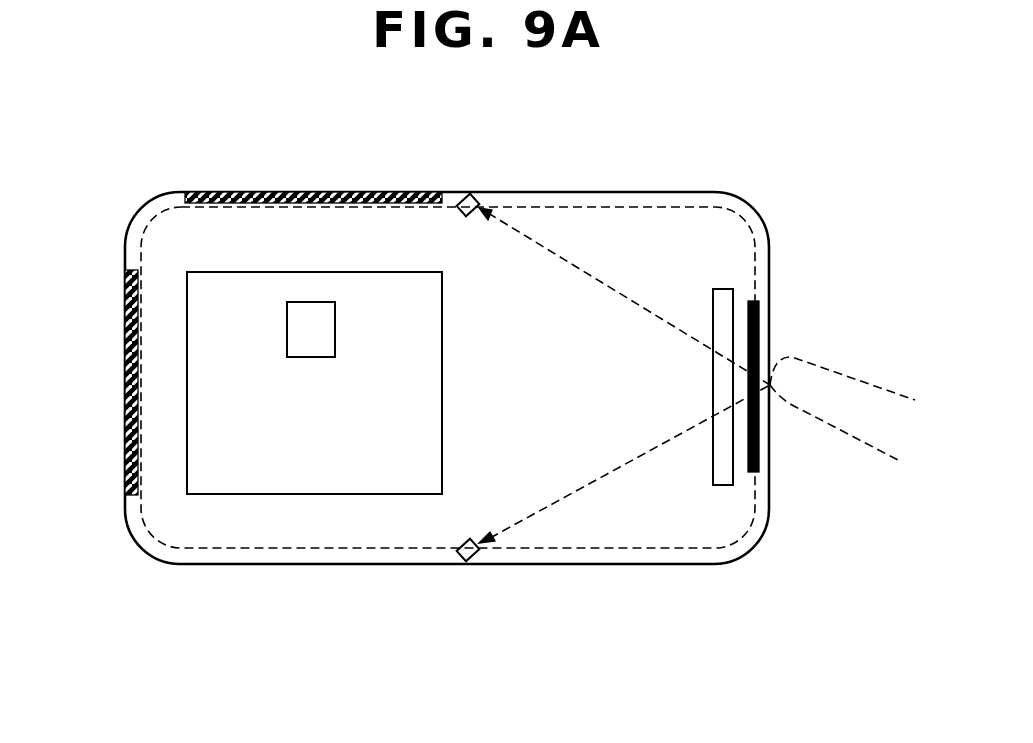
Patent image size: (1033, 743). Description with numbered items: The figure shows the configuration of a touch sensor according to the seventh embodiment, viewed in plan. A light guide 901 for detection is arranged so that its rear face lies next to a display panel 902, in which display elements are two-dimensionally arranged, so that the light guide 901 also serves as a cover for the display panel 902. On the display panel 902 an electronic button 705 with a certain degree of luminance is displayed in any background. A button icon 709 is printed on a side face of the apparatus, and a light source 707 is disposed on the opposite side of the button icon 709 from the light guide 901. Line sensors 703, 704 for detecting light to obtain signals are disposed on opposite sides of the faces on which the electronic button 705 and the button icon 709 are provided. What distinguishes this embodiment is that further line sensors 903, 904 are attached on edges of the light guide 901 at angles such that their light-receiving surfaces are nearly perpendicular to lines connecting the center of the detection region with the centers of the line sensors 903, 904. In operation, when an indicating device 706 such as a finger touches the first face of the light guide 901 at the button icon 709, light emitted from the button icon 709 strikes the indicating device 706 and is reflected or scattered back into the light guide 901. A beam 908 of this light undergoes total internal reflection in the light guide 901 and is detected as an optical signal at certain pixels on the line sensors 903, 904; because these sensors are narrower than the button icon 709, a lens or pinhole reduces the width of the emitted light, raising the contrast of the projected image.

The light guide 901 is at (155, 393).
The line sensor 703 is at (125, 301).
The line sensor 704 is at (330, 192).
The display panel 902 is at (241, 283).
The electronic button 705 is at (315, 302).
The line sensor 904 is at (482, 195).
The line sensor 903 is at (472, 562).
The beam 908 is at (580, 490).
The light source 707 is at (723, 289).
The button icon 709 is at (755, 310).
The indicating device 706 is at (855, 441).